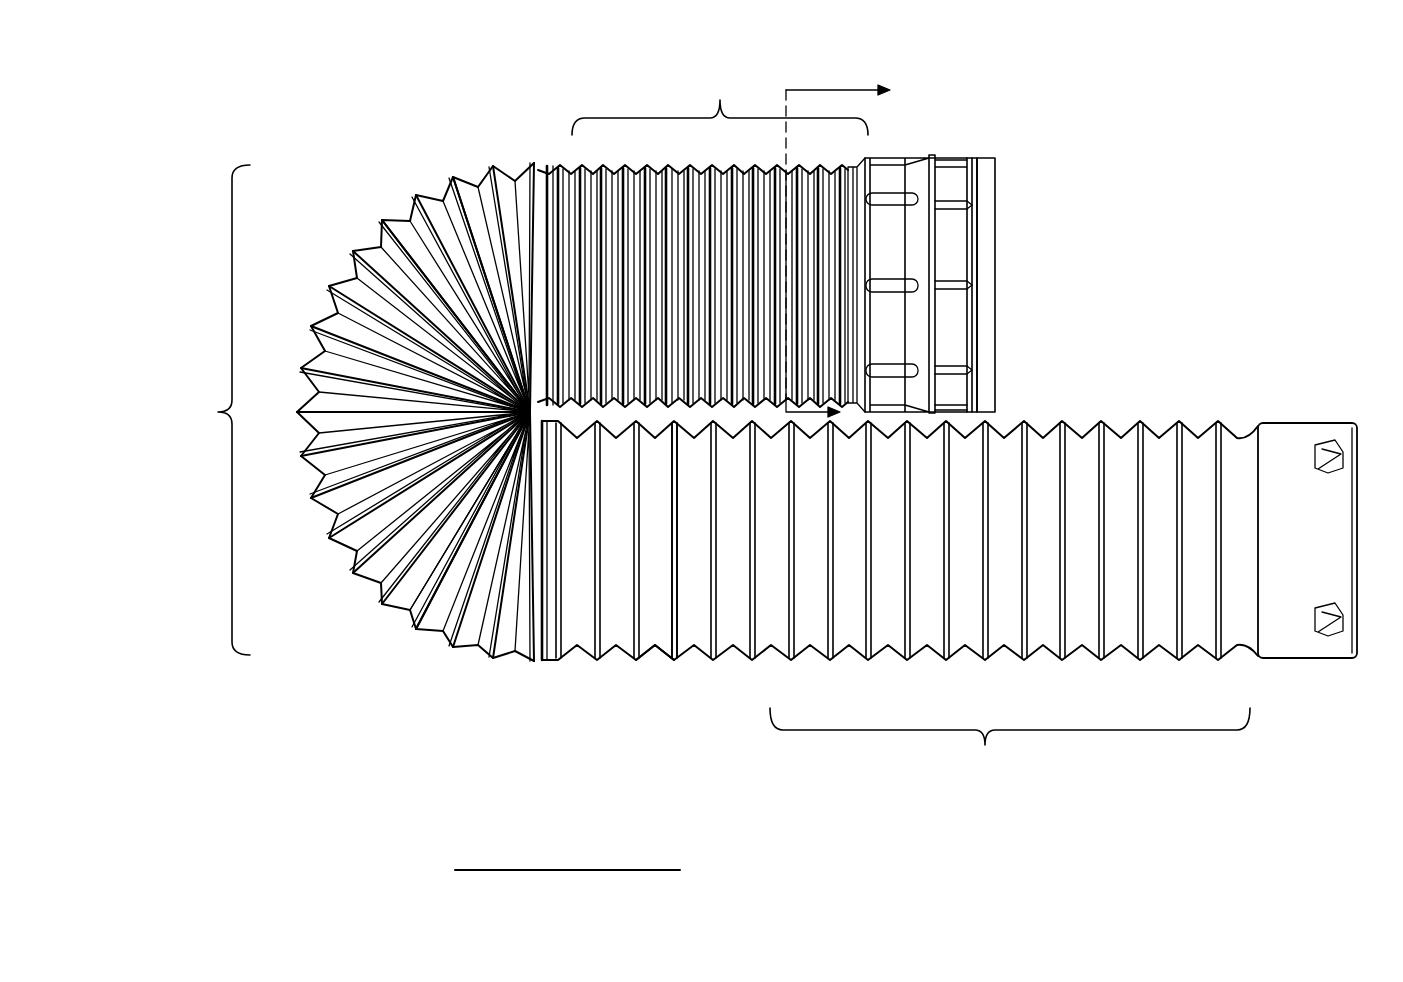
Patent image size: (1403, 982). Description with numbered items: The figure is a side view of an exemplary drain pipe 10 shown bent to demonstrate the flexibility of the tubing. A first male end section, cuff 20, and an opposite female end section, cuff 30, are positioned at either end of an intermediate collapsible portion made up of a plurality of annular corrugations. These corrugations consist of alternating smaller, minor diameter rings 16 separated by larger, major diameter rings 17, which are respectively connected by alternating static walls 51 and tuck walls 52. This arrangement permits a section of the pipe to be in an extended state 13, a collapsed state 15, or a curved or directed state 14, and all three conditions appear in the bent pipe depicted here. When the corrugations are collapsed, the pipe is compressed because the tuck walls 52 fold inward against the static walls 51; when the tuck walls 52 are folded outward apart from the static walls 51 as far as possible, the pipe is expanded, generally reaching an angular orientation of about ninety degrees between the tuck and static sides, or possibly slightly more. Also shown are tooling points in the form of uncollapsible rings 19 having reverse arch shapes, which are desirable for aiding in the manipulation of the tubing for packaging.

The drain pipe 10 is at (1225, 107).
The extended state 13 is at (985, 745).
The curved or directed state 14 is at (218, 411).
The collapsed state 15 is at (722, 97).
The minor diameter rings 16 is at (440, 186).
The major diameter rings 17 is at (384, 218).
The uncollapsible rings 19 is at (548, 168).
The cuff 20 is at (1298, 423).
The cuff 30 is at (955, 156).
The static walls 51 is at (426, 630).
The tuck walls 52 is at (410, 614).